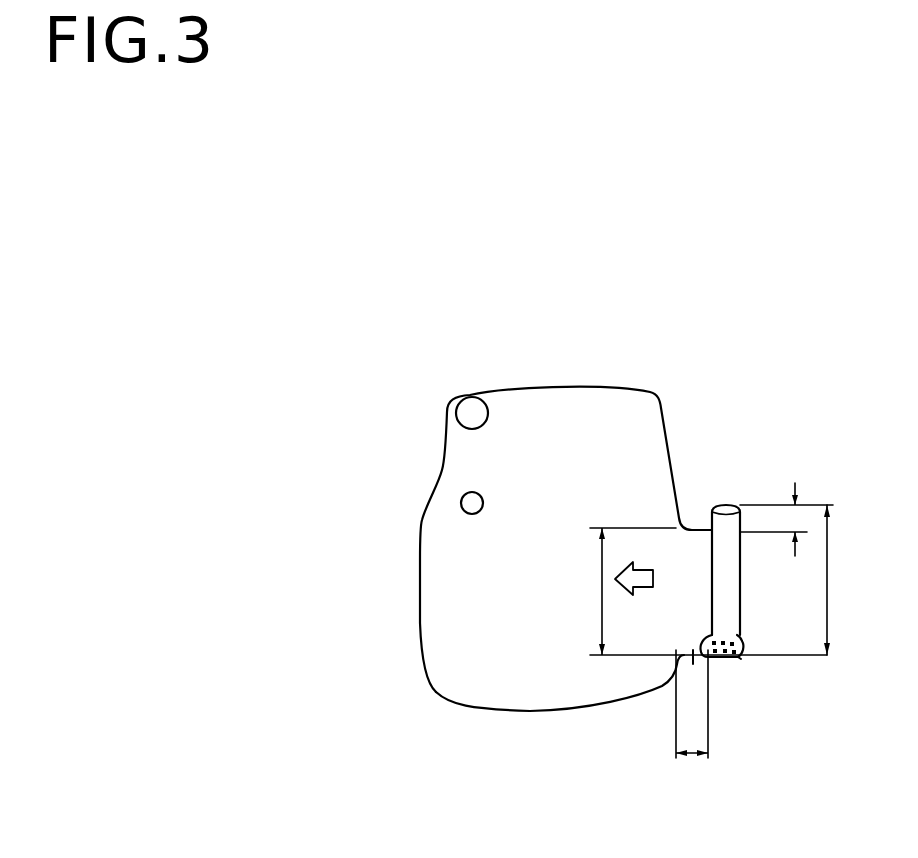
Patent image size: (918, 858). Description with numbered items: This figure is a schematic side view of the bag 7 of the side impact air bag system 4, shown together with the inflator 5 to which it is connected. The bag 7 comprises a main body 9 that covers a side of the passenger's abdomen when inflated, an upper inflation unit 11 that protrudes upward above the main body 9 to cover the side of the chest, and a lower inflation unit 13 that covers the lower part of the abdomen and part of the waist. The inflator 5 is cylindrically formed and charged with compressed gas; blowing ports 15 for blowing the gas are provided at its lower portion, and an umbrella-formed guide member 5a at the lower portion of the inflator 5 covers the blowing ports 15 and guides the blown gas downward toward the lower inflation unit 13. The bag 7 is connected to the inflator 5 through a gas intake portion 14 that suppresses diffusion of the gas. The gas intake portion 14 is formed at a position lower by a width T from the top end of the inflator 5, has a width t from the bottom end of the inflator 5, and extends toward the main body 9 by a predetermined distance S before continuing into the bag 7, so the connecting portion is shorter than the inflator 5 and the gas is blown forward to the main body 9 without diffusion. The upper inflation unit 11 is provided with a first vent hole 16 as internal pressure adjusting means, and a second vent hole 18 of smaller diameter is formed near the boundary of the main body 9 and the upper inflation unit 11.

The side impact air bag system 4 is at (693, 382).
The inflator 5 is at (725, 520).
The guide member 5a is at (742, 641).
The bag 7 is at (399, 643).
The main body 9 is at (446, 571).
The upper inflation unit 11 is at (550, 402).
The lower inflation unit 13 is at (545, 692).
The gas intake portion 14 is at (697, 658).
The blowing ports 15 is at (741, 659).
The first vent hole 16 is at (473, 408).
The second vent hole 18 is at (460, 500).